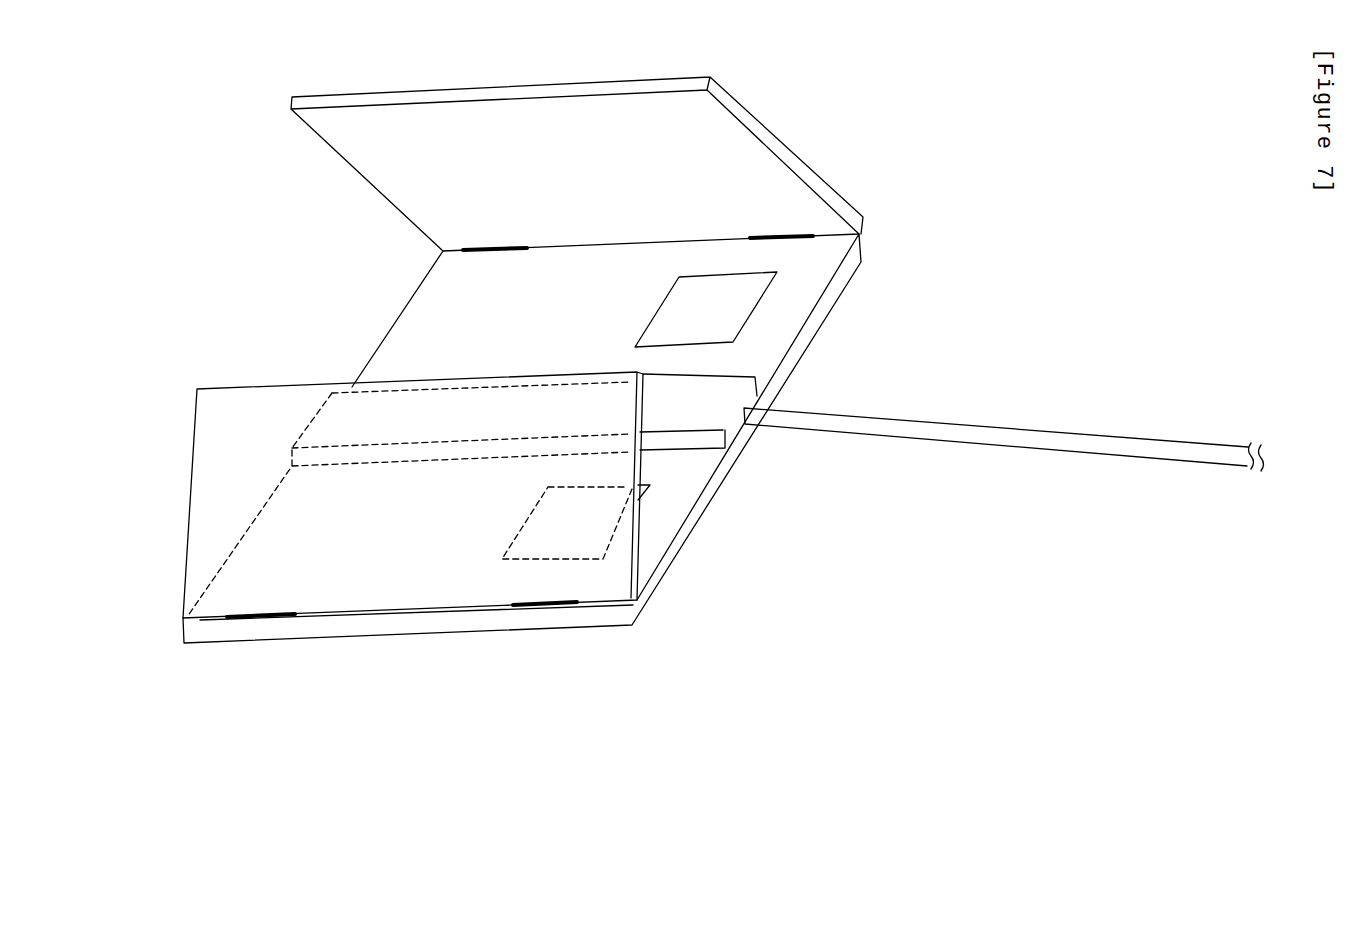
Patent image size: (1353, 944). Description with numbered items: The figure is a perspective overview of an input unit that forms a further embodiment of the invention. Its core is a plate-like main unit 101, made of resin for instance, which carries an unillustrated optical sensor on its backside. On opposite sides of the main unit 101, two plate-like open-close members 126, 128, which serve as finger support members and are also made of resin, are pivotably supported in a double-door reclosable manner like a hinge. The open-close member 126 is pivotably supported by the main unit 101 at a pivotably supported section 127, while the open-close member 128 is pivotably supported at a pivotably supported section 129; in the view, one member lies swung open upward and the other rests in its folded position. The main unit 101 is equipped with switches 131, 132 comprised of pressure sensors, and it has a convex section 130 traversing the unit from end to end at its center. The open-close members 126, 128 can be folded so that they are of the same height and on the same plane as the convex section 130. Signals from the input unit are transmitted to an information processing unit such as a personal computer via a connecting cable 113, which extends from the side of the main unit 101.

The plate-like main unit 101 is at (430, 318).
The connecting cable 113 is at (1157, 448).
The open-close member 126 is at (216, 434).
The pivotably supported section 127 is at (290, 620).
The open-close member 128 is at (383, 99).
The pivotably supported section 129 is at (500, 253).
The convex section 130 is at (720, 398).
The switch 131 is at (725, 309).
The switch 132 is at (587, 532).